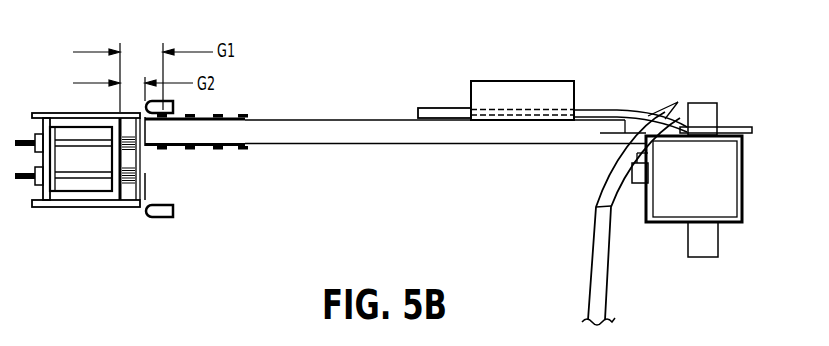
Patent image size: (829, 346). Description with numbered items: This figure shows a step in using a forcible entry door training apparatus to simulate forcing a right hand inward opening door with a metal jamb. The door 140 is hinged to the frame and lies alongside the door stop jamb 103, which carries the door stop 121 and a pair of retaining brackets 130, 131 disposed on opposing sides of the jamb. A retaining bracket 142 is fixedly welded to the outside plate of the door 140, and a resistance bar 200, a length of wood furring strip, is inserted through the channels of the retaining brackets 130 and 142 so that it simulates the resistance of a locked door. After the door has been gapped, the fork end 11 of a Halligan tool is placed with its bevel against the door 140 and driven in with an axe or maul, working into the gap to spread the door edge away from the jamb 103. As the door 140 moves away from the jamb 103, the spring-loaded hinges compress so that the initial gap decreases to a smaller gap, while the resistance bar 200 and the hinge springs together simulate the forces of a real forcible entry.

The fork end 11 is at (603, 171).
The door stop jamb 103 is at (667, 223).
The door stop 121 is at (637, 183).
The retaining bracket 130 is at (703, 102).
The retaining bracket 131 is at (705, 257).
The door 140 is at (353, 128).
The retaining bracket 142 is at (528, 80).
The resistance bar 200 is at (607, 108).